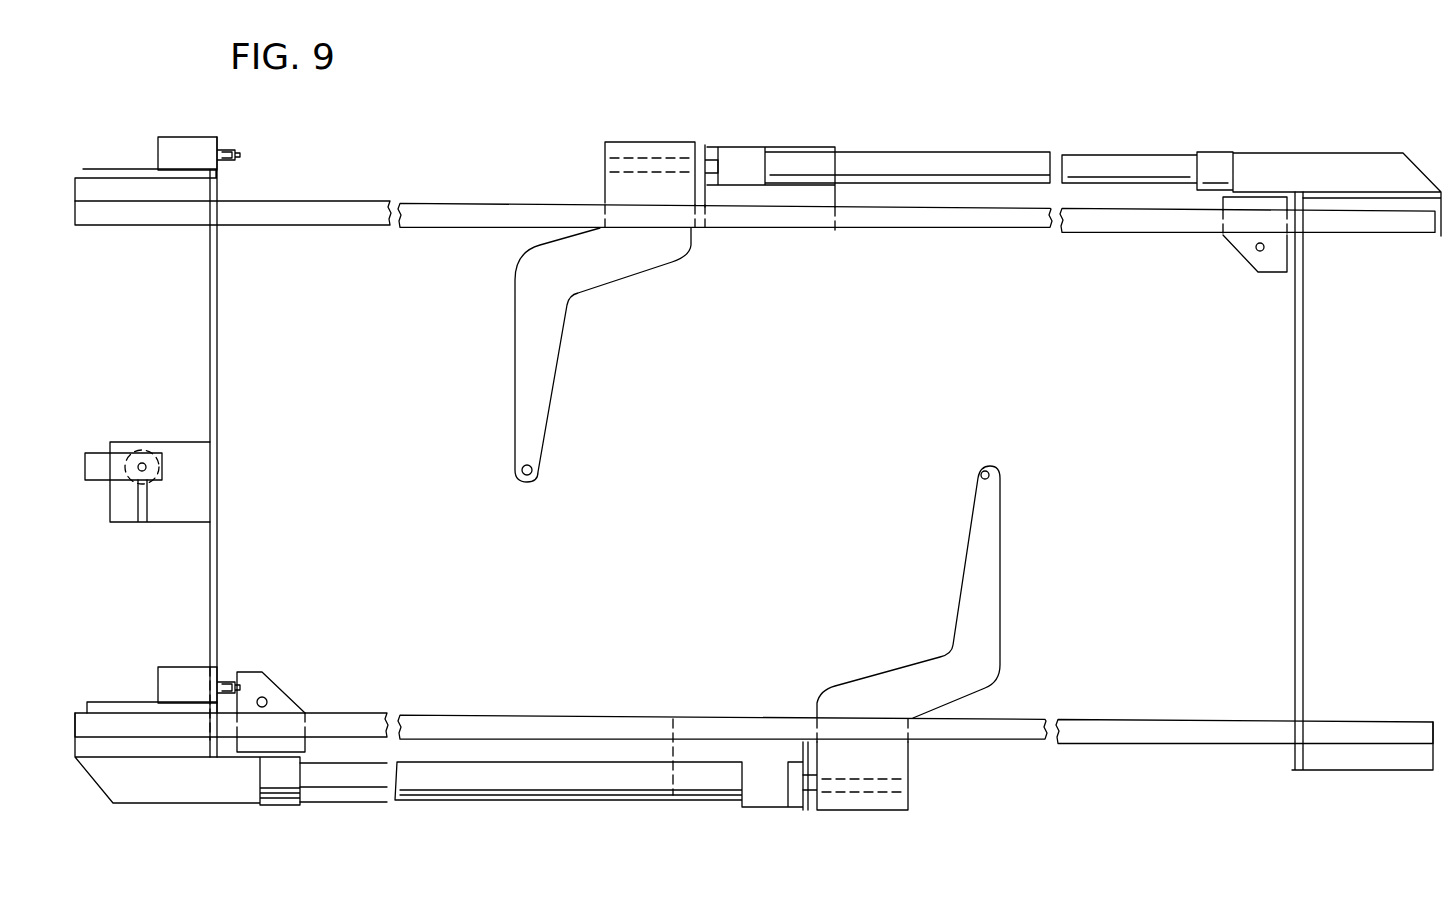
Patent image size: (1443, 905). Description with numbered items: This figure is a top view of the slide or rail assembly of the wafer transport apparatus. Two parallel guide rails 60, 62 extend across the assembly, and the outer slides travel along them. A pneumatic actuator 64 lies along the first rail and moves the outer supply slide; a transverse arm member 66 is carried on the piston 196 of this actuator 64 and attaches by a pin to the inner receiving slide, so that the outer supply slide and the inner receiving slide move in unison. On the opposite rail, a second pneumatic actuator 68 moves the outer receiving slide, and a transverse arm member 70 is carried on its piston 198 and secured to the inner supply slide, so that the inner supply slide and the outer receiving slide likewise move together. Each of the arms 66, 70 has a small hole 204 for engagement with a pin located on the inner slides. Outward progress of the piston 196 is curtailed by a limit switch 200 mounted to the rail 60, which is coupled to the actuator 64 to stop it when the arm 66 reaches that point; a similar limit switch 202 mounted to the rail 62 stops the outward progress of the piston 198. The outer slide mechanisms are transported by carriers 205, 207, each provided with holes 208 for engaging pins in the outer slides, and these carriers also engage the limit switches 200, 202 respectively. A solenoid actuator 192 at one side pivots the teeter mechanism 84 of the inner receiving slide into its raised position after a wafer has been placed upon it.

The guide rail 60 is at (304, 203).
The guide rail 62 is at (1135, 747).
The pneumatic actuator 64 is at (956, 152).
The transverse arm member 66 is at (514, 350).
The second pneumatic actuator 68 is at (478, 806).
The transverse arm member 70 is at (1001, 623).
The teeter mechanism 84 is at (96, 483).
The solenoid actuator 192 is at (148, 450).
The piston 196 is at (704, 150).
The piston 198 is at (810, 811).
The limit switch 200 is at (176, 137).
The limit switch 202 is at (188, 667).
The small hole 204 is at (530, 475).
The carrier 205 is at (1267, 273).
The carrier 207 is at (252, 672).
The hole 208 is at (1256, 250).